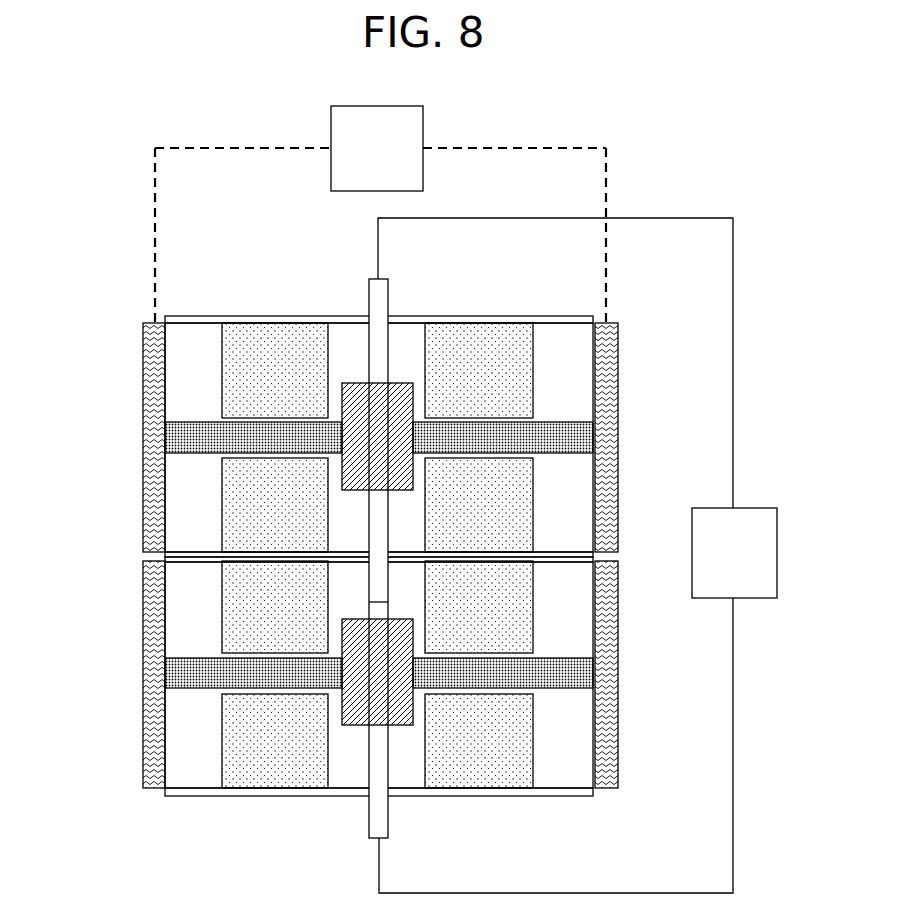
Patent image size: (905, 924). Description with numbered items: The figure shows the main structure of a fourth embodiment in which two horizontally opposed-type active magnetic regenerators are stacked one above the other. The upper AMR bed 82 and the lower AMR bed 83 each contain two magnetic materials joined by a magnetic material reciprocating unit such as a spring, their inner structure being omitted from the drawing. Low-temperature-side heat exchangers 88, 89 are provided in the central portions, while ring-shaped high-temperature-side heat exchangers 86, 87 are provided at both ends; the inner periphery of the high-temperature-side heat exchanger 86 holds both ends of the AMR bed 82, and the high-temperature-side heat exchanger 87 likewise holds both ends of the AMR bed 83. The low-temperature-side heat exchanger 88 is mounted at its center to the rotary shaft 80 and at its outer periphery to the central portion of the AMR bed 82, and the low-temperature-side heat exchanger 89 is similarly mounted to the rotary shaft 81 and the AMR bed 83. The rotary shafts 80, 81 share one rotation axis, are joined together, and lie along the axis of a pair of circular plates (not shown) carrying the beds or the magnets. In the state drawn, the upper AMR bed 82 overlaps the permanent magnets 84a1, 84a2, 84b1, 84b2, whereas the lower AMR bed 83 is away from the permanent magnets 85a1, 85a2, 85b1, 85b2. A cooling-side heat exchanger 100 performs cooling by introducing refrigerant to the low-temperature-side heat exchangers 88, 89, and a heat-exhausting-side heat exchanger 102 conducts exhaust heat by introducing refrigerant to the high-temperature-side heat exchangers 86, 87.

The rotary shaft 80 is at (384, 350).
The rotary shaft 81 is at (382, 815).
The AMR bed 82 is at (230, 426).
The AMR bed 83 is at (195, 677).
The permanent magnet 84a1 is at (277, 347).
The permanent magnet 84a2 is at (255, 512).
The permanent magnet 84b1 is at (485, 347).
The permanent magnet 84b2 is at (488, 523).
The permanent magnet 85a1 is at (255, 630).
The permanent magnet 85a2 is at (278, 768).
The permanent magnet 85b1 is at (482, 602).
The permanent magnet 85b2 is at (475, 768).
The high-temperature-side heat exchanger 86 is at (152, 387).
The high-temperature-side heat exchanger 87 is at (152, 678).
The low-temperature-side heat exchanger 88 is at (369, 420).
The low-temperature-side heat exchanger 89 is at (369, 695).
The cooling-side heat exchanger 100 is at (732, 545).
The heat-exhausting-side heat exchanger 102 is at (380, 147).